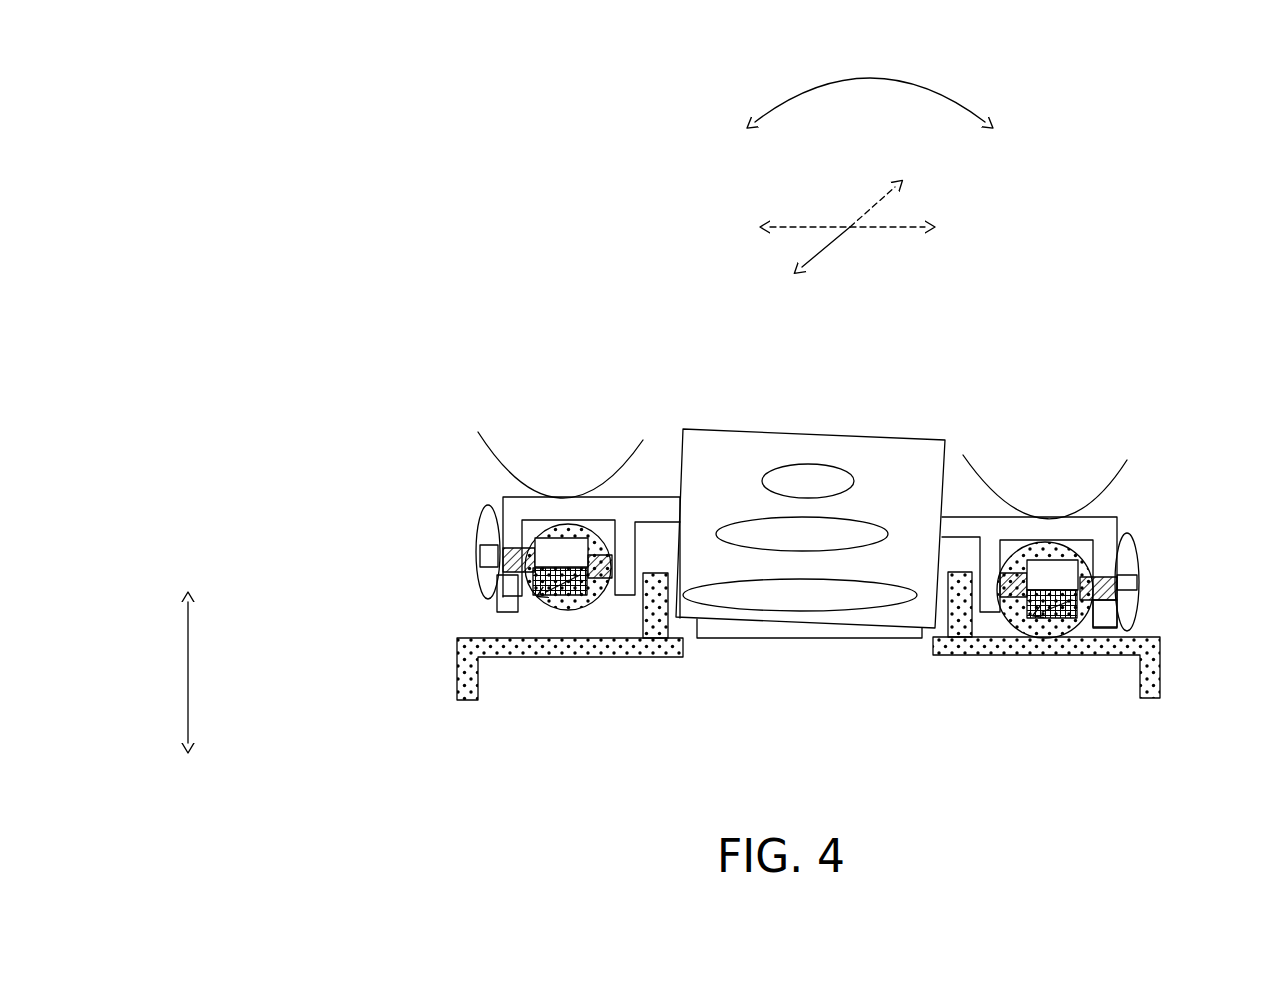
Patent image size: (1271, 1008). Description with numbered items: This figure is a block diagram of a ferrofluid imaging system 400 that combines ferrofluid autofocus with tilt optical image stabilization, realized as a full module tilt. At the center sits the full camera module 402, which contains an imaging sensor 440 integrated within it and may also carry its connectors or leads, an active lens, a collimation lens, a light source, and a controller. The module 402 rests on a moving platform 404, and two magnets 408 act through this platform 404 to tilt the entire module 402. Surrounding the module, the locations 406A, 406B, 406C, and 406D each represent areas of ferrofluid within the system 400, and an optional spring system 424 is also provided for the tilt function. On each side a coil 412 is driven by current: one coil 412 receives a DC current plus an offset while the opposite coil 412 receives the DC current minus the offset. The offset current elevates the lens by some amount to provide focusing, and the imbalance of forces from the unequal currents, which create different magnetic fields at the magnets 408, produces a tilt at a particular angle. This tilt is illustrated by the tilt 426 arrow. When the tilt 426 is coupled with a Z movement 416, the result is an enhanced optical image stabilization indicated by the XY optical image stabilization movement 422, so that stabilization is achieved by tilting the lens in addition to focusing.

The ferrofluid imaging system 400 is at (806, 813).
The full camera module 402 is at (815, 432).
The moving platform 404 is at (651, 497).
The location of ferrofluid 406A is at (547, 618).
The location of ferrofluid 406B is at (1040, 640).
The location of ferrofluid 406C is at (592, 657).
The location of ferrofluid 406D is at (1162, 660).
The magnet 408 is at (520, 594).
The coil 412 is at (480, 530).
The Z movement 416 is at (192, 616).
The XY optical image stabilization movement 422 is at (909, 210).
The spring system 424 is at (537, 402).
The tilt 426 is at (870, 85).
The imaging sensor 440 is at (737, 630).